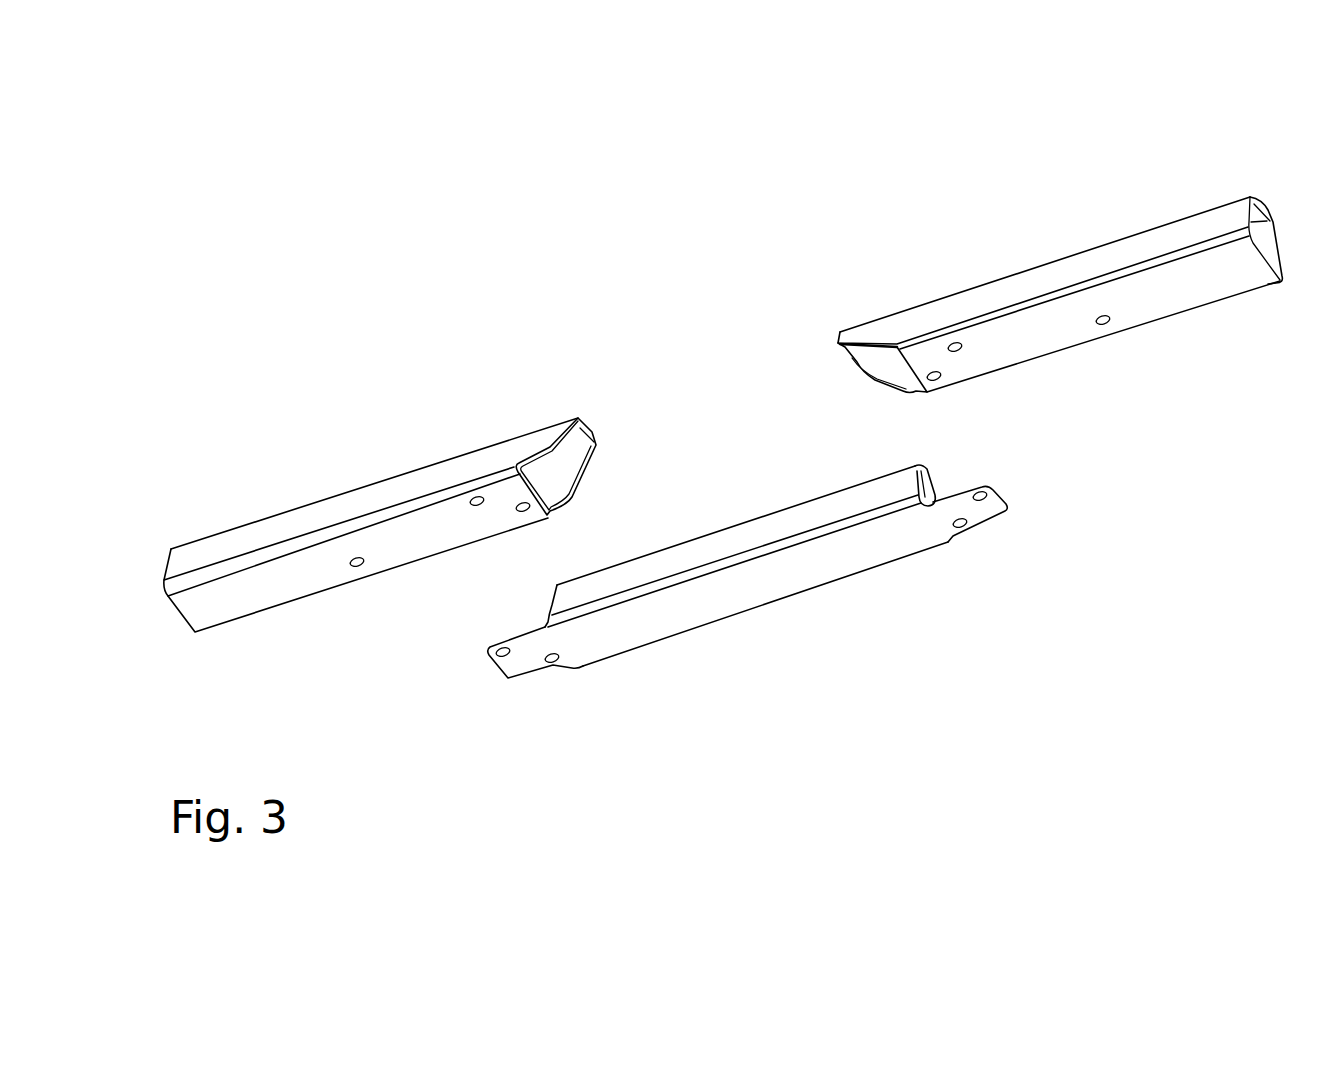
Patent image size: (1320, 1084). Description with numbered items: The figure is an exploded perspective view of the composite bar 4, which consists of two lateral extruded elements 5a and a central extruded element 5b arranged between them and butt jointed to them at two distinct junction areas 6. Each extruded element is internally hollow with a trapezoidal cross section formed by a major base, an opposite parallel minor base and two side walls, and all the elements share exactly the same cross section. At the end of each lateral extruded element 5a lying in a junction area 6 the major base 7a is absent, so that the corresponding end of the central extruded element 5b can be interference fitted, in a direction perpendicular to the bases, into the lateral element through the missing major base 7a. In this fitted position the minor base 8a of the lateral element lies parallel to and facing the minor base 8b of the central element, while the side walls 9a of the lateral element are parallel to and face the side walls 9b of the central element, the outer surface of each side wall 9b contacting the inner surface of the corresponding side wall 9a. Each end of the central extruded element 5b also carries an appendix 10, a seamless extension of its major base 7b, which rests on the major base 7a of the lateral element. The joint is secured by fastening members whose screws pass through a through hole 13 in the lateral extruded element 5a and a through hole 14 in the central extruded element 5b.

The composite bar 4 is at (1068, 748).
The lateral extruded element 5a is at (343, 403).
The central extruded element 5b is at (712, 305).
The junction area 6 is at (978, 604).
The major base 7a is at (397, 548).
The major base 7b is at (757, 583).
The minor base 8a is at (597, 440).
The minor base 8b is at (931, 469).
The side wall 9a is at (417, 480).
The side wall 9b is at (750, 535).
The appendix 10 is at (1024, 518).
The through hole 13 is at (525, 513).
The through hole 14 is at (983, 501).